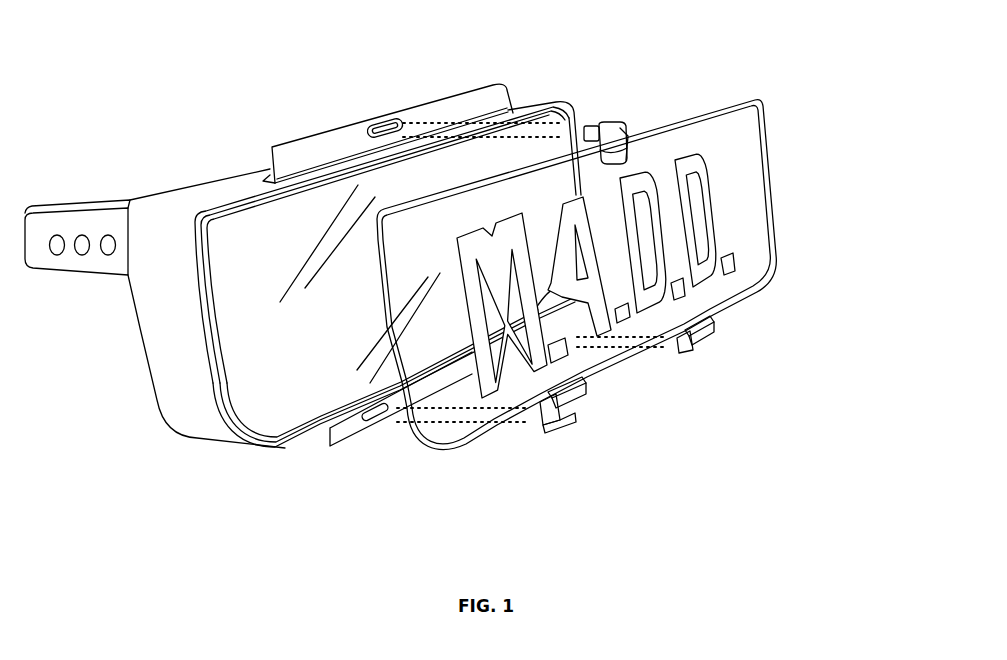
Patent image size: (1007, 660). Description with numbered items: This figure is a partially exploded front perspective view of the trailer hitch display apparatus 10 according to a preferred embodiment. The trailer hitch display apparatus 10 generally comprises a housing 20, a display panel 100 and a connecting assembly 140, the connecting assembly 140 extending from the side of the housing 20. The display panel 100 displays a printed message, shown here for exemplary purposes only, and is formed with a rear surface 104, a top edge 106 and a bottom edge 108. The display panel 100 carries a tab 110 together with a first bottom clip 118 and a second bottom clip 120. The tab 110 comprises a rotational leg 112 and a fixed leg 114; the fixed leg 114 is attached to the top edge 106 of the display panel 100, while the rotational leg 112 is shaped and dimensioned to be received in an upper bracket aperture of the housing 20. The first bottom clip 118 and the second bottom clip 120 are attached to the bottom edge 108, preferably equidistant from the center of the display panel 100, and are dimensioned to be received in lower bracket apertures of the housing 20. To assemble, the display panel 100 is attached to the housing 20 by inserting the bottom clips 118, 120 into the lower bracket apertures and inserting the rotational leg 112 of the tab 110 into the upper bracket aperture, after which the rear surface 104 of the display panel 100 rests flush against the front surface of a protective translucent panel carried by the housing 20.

The trailer hitch display apparatus 10 is at (626, 480).
The housing 20 is at (197, 436).
The display panel 100 is at (768, 114).
The rear surface 104 is at (732, 202).
The top edge 106 is at (668, 118).
The bottom edge 108 is at (627, 372).
The tab 110 is at (612, 123).
The rotational leg 112 is at (585, 125).
The fixed leg 114 is at (628, 135).
The first bottom clip 118 is at (568, 423).
The second bottom clip 120 is at (704, 344).
The connecting assembly 140 is at (113, 200).